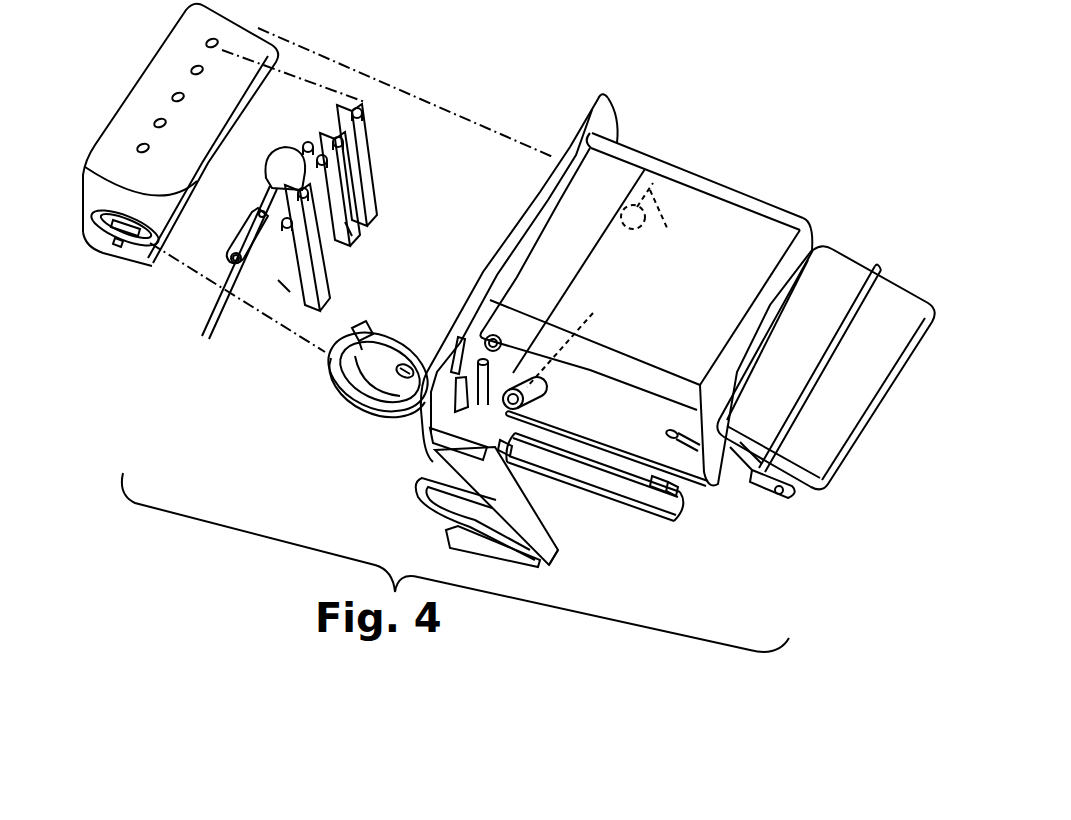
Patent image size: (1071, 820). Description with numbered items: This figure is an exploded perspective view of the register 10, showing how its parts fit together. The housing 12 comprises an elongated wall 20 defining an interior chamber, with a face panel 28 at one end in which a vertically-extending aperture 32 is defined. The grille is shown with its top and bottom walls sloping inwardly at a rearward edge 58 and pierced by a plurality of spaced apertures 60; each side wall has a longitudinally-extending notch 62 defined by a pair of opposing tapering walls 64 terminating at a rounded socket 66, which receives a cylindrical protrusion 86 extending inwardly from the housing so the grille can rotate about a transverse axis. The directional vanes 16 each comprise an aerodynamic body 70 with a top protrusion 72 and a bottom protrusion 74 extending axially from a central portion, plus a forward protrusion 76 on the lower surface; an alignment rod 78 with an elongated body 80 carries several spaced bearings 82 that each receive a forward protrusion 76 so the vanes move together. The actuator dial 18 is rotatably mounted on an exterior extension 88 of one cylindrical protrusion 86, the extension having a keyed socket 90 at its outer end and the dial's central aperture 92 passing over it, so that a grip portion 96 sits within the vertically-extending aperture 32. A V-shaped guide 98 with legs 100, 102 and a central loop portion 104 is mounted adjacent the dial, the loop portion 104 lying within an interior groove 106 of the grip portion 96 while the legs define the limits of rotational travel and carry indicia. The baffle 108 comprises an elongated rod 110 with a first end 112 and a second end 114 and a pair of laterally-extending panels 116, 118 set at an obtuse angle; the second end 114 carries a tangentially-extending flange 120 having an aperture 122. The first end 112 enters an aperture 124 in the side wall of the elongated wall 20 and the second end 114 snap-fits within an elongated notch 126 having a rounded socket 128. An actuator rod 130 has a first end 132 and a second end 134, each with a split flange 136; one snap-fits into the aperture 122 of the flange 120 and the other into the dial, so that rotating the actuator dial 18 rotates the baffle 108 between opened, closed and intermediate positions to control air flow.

The register 10 is at (230, 444).
The housing 12 is at (695, 175).
The directional vanes 16 is at (380, 220).
The actuator dial 18 is at (384, 410).
The elongated wall 20 is at (728, 222).
The face panel 28 is at (613, 122).
The vertically-extending aperture 32 is at (452, 385).
The rearward edge 58 is at (232, 134).
The spaced apertures 60 is at (205, 42).
The longitudinally-extending notch 62 is at (119, 247).
The tapering walls 64 is at (147, 242).
The rounded socket 66 is at (105, 222).
The aerodynamic body 70 is at (367, 180).
The top protrusion 72 is at (361, 112).
The bottom protrusion 74 is at (288, 300).
The forward protrusion 76 is at (283, 283).
The alignment rod 78 is at (262, 196).
The elongated body 80 is at (258, 220).
The bearings 82 is at (252, 227).
The cylindrical protrusion 86 is at (605, 285).
The exterior extension 88 is at (545, 394).
The keyed socket 90 is at (528, 402).
The central aperture 92 is at (408, 366).
The grip portion 96 is at (343, 367).
The V-shaped guide 98 is at (546, 548).
The leg 100 is at (522, 498).
The leg 102 is at (487, 547).
The central loop portion 104 is at (442, 492).
The interior groove 106 is at (355, 340).
The baffle 108 is at (843, 482).
The elongated rod 110 is at (851, 300).
The first end 112 is at (874, 272).
The second end 114 is at (746, 470).
The laterally-extending panel 116 is at (814, 352).
The laterally-extending panel 118 is at (887, 382).
The tangentially-extending flange 120 is at (764, 490).
The aperture 122 is at (782, 493).
The aperture 124 is at (792, 224).
The elongated notch 126 is at (664, 435).
The rounded socket 128 is at (666, 426).
The actuator rod 130 is at (626, 508).
The first end 132 is at (674, 495).
The second end 134 is at (522, 420).
The split flange 136 is at (512, 458).